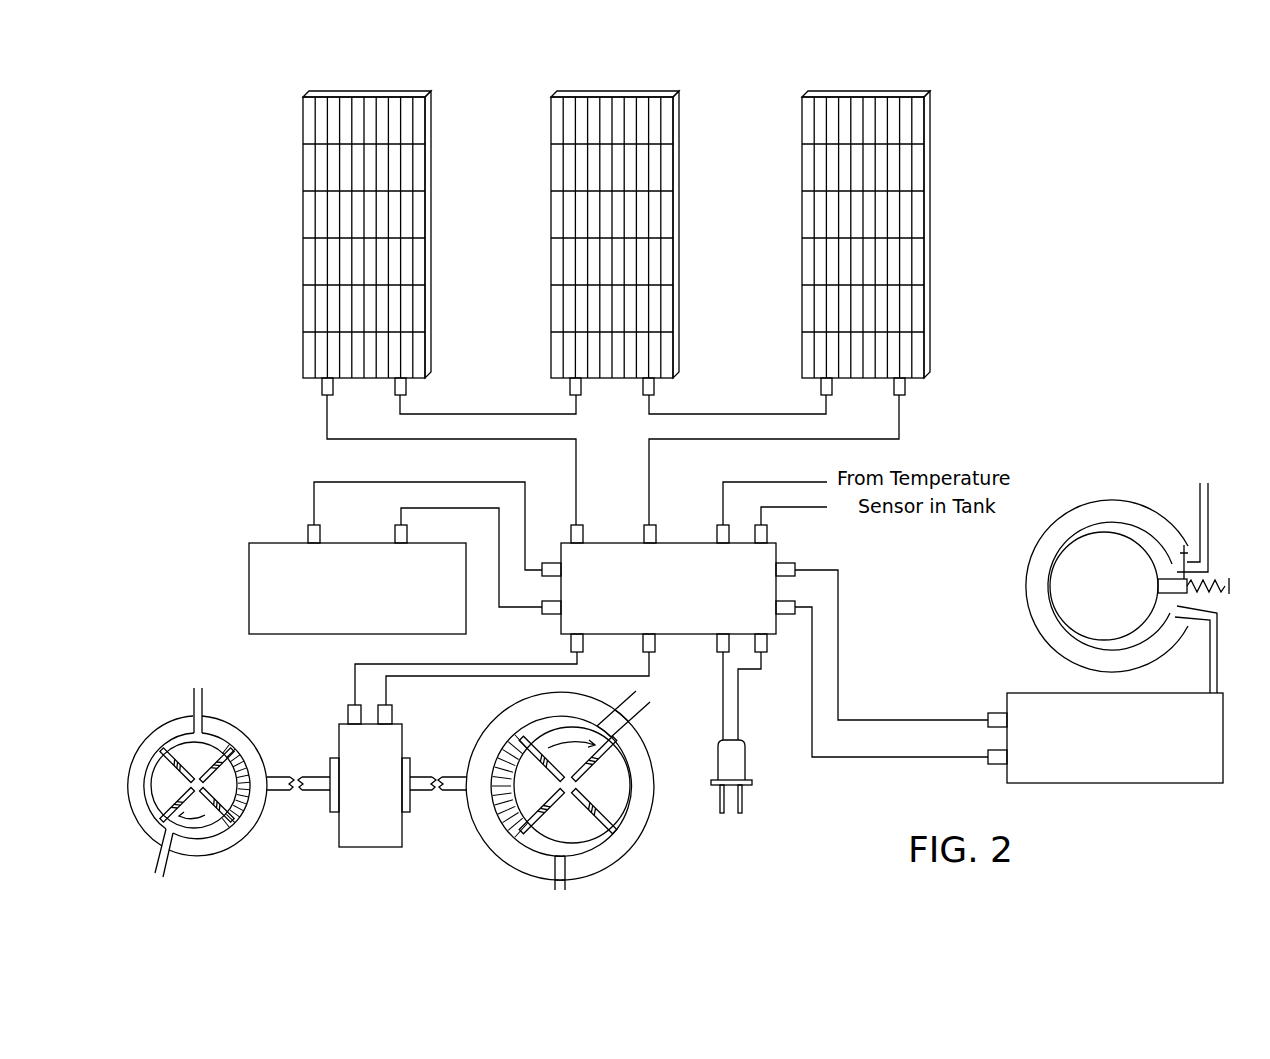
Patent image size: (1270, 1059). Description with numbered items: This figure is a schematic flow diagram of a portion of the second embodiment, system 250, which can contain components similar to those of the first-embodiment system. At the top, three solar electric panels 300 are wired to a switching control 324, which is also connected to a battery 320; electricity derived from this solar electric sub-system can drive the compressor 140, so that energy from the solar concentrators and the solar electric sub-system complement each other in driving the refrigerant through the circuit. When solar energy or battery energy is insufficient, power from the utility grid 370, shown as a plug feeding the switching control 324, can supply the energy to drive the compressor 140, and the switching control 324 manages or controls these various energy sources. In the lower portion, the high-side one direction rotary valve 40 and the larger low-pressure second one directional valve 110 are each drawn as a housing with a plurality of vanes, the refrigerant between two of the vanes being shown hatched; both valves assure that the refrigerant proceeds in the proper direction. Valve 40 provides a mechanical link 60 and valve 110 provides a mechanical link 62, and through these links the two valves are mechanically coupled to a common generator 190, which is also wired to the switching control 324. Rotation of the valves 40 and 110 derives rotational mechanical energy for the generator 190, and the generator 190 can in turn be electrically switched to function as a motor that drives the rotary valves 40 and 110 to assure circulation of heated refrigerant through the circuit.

The solar electric panel 300 is at (303, 158).
The system 250 is at (1038, 366).
The battery 320 is at (249, 558).
The switching control 324 is at (689, 637).
The compressor 140 is at (1027, 565).
The one direction valve 40 is at (147, 726).
The mechanical link 60 is at (288, 757).
The generator 190 is at (350, 850).
The mechanical link 62 is at (441, 766).
The second one directional valve 110 is at (659, 771).
The utility grid 370 is at (752, 783).